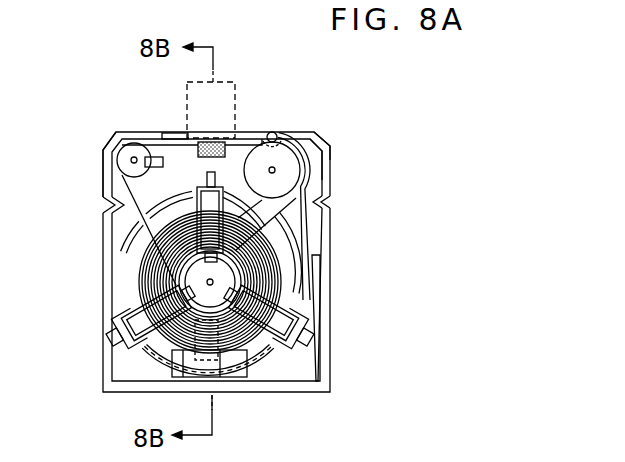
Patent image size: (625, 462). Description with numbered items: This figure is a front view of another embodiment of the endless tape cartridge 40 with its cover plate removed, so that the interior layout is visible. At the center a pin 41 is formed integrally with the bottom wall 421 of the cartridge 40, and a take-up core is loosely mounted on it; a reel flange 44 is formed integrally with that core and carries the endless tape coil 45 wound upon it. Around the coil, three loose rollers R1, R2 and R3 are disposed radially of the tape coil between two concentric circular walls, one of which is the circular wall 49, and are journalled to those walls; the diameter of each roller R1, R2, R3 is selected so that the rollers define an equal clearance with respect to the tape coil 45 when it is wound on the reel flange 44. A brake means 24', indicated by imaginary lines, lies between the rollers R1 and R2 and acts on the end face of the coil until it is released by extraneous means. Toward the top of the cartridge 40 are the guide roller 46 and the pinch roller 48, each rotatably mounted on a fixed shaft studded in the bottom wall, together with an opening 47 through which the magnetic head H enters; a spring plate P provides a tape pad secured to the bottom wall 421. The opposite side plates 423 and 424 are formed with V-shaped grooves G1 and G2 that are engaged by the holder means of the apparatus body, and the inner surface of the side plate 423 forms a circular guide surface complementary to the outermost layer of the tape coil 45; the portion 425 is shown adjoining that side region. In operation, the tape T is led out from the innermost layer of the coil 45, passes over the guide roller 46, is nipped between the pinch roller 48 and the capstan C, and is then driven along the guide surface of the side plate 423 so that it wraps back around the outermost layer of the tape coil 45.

The endless tape cartridge 40 is at (372, 111).
The pin 41 is at (207, 282).
The reel flange 44 is at (286, 254).
The endless tape coil 45 is at (143, 273).
The guide roller 46 is at (135, 147).
The opening 47 is at (212, 134).
The pinch roller 48 is at (280, 168).
The circular wall 49 is at (137, 347).
The brake means 24' is at (229, 371).
The bottom wall 421 is at (308, 355).
The side plate 423 is at (325, 147).
The side plate 424 is at (105, 173).
The inner corner 425 is at (310, 172).
The capstan C is at (274, 131).
The magnetic head H is at (218, 93).
The spring plate P is at (206, 145).
The tape T is at (115, 205).
The V-shaped groove G1 is at (111, 211).
The V-shaped groove G2 is at (330, 210).
The loose roller R1 is at (142, 322).
The loose roller R2 is at (308, 300).
The loose roller R3 is at (208, 205).